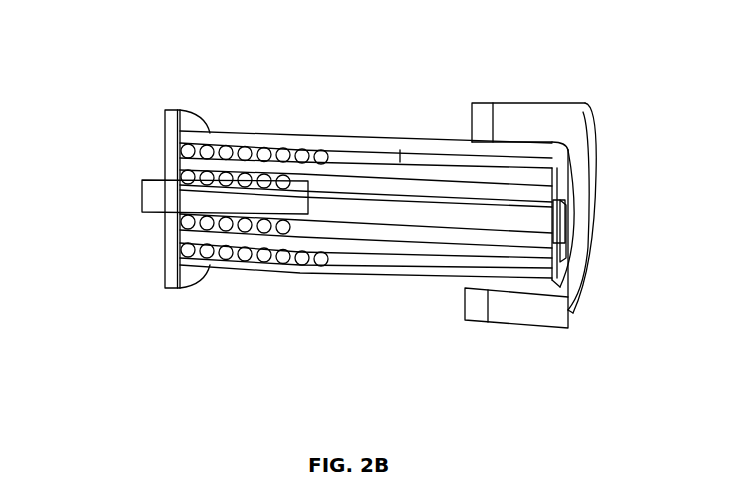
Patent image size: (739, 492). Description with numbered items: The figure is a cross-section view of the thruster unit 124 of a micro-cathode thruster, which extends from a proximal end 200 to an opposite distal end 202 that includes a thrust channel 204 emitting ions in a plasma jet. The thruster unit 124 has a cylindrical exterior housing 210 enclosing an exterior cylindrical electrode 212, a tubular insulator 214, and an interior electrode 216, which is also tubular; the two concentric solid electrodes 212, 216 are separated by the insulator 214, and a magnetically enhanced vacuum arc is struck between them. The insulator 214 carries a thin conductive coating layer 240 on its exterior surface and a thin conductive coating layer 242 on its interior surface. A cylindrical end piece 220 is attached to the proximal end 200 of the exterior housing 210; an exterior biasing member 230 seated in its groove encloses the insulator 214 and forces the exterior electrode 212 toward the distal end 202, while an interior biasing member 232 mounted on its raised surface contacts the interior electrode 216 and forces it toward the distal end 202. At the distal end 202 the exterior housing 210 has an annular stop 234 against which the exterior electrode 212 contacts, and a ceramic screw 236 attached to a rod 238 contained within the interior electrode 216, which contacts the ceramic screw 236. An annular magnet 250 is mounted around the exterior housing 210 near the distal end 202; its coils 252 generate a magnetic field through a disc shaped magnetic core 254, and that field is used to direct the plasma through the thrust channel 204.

The thruster unit 124 is at (200, 60).
The proximal end 200 is at (114, 196).
The distal end 202 is at (597, 183).
The thrust channel 204 is at (575, 222).
The cylindrical exterior housing 210 is at (320, 137).
The exterior cylindrical electrode 212 is at (442, 162).
The tubular insulator 214 is at (495, 177).
The interior electrode 216 is at (346, 180).
The cylindrical end piece 220 is at (165, 117).
The exterior biasing member 230 is at (227, 143).
The interior biasing member 232 is at (276, 178).
The annular stop 234 is at (590, 170).
The ceramic screw 236 is at (562, 238).
The rod 238 is at (478, 218).
The thin conductive coating layer 240 is at (401, 162).
The thin conductive coating layer 242 is at (308, 183).
The annular magnet 250 is at (565, 122).
The coils 252 is at (585, 112).
The disc shaped magnetic core 254 is at (486, 112).